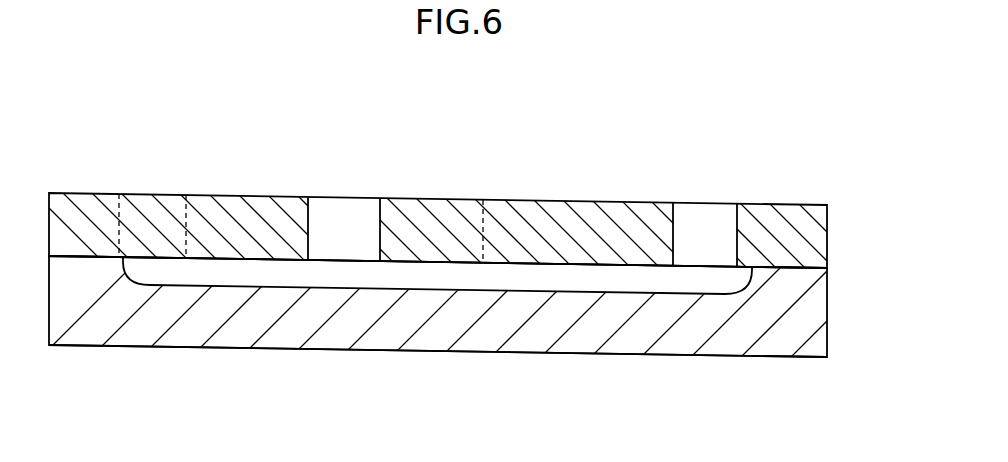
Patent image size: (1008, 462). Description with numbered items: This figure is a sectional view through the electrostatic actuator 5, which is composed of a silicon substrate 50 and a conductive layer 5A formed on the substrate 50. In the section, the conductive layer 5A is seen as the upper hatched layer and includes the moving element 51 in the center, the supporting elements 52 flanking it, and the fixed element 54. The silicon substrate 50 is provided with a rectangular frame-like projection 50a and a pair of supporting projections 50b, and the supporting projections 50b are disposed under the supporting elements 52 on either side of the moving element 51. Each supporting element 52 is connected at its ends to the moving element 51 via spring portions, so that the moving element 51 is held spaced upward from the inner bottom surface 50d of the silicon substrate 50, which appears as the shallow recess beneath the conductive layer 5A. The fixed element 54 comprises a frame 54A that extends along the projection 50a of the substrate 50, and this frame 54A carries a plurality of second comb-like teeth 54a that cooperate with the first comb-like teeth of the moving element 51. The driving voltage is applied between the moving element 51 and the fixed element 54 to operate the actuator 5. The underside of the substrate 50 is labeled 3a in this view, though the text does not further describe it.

The electrostatic actuator 5 is at (512, 274).
The conductive layer 5A is at (824, 194).
The silicon substrate 50 is at (515, 338).
The frame-like projection 50a is at (95, 318).
The supporting projections 50b is at (345, 205).
The inner bottom surface 50d is at (476, 281).
The moving element 51 is at (455, 200).
The supporting elements 52 is at (263, 200).
The fixed element 54 is at (782, 202).
The frame 54A is at (87, 198).
The second comb-like teeth 54a is at (217, 194).
The lower surface of substrate 3a is at (596, 357).